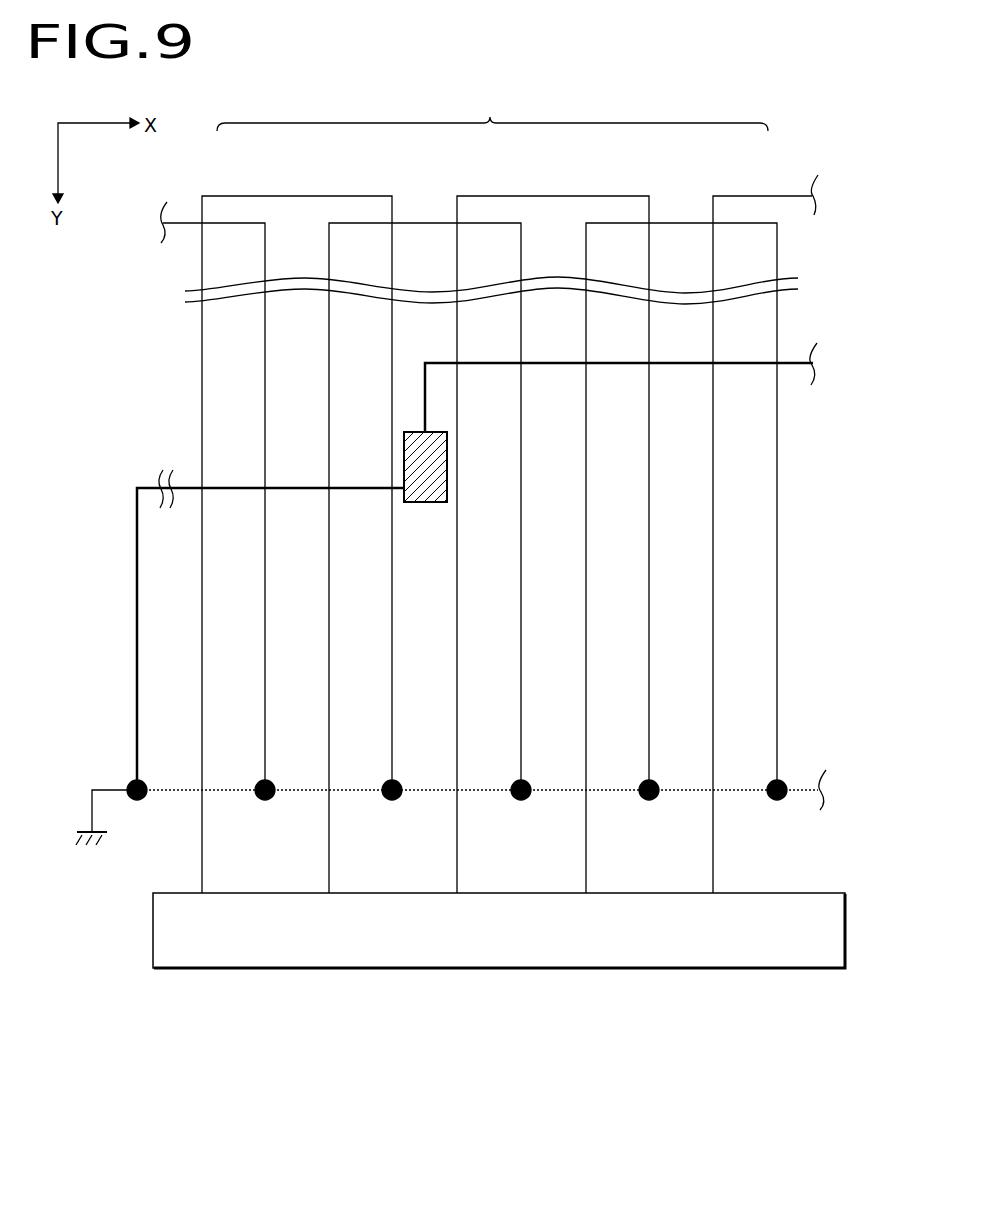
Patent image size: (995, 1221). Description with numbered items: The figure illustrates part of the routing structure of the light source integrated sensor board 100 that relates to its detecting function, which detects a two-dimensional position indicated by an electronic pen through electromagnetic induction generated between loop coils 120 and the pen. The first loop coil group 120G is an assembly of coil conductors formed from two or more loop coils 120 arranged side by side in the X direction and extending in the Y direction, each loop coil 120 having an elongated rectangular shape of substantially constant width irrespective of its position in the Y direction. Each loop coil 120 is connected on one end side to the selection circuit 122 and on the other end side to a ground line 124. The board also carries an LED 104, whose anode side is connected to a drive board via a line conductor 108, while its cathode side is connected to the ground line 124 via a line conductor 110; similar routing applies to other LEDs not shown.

The light source integrated sensor board 100 is at (122, 352).
The LED 104 is at (422, 503).
The line conductor 108 is at (792, 367).
The line conductor 110 is at (136, 591).
The loop coil 120 is at (242, 222).
The first loop coil group 120G is at (492, 110).
The selection circuit 122 is at (790, 970).
The ground line 124 is at (110, 788).